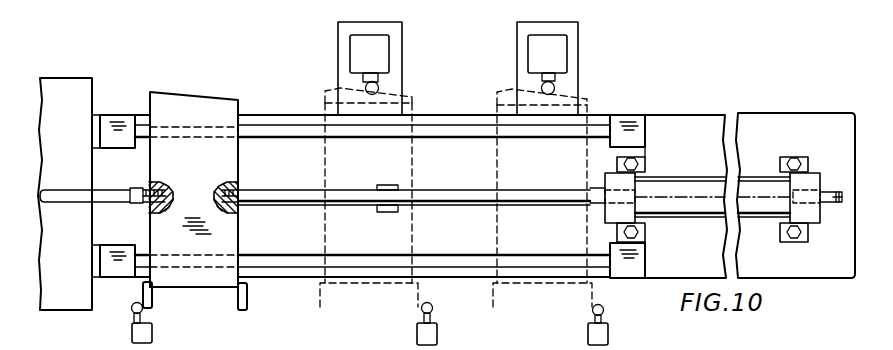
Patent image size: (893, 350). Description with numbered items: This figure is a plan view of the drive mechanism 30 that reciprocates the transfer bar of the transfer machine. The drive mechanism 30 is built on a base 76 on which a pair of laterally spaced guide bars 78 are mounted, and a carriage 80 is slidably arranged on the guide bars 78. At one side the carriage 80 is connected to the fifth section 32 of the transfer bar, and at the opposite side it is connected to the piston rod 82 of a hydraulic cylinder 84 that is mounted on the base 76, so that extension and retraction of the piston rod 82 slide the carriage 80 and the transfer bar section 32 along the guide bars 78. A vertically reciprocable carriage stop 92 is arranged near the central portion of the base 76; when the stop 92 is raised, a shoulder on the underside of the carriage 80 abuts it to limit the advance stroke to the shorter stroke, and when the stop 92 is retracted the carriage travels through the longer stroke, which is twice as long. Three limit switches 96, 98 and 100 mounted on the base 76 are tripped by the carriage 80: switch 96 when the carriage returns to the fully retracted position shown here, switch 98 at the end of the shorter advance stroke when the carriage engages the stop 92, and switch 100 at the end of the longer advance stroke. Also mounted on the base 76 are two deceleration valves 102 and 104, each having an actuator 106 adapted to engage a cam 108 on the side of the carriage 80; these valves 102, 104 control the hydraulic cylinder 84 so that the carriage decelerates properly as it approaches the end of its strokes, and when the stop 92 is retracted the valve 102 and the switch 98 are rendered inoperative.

The drive mechanism 30 is at (683, 62).
The fifth section of the transfer bar 32 is at (107, 191).
The base 76 is at (787, 127).
The guide bars 78 is at (272, 126).
The carriage 80 is at (178, 281).
The piston rod 82 is at (454, 189).
The hydraulic cylinder 84 is at (683, 183).
The carriage stop 92 is at (389, 214).
The limit switch 96 is at (131, 334).
The limit switch 98 is at (437, 331).
The limit switch 100 is at (609, 337).
The deceleration valve 102 is at (386, 48).
The deceleration valve 104 is at (560, 42).
The actuator 106 is at (380, 82).
The cam 108 is at (200, 99).